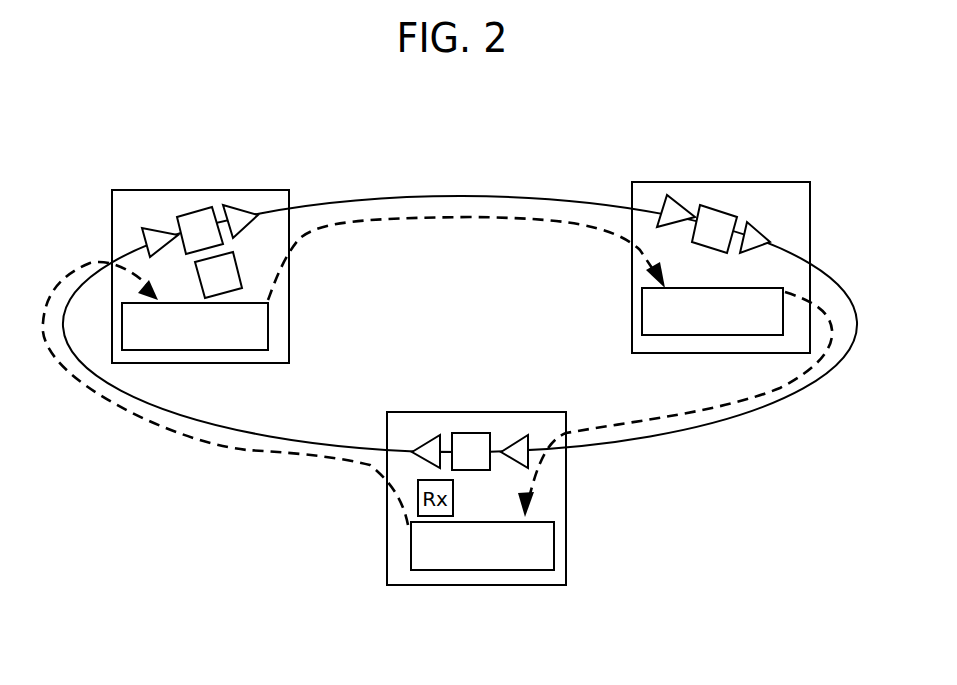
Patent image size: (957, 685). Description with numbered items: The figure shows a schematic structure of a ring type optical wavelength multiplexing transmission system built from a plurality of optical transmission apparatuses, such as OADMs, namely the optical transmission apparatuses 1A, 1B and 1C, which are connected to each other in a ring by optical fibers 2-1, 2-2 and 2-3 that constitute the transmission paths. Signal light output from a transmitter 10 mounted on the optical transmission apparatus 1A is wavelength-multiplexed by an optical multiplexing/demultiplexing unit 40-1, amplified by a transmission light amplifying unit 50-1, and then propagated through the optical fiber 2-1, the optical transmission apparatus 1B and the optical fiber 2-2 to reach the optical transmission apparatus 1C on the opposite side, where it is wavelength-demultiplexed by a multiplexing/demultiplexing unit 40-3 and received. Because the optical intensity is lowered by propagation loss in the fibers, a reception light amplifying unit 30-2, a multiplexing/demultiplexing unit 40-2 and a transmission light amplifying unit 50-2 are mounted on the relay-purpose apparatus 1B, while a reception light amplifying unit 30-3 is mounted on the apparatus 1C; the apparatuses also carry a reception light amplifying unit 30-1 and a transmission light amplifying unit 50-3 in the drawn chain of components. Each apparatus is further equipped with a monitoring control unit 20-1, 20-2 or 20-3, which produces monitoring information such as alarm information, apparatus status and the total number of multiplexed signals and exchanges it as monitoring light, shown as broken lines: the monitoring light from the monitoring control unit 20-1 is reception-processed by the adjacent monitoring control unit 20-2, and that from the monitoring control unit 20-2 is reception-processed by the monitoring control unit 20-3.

The optical transmission apparatus 1A is at (278, 363).
The optical transmission apparatus 1B is at (650, 353).
The optical transmission apparatus 1C is at (545, 585).
The optical fiber 2-1 is at (443, 196).
The optical fiber 2-2 is at (728, 420).
The optical fiber 2-3 is at (181, 418).
The transmitter 10 is at (240, 265).
The monitoring control unit 20-1 is at (218, 350).
The monitoring control unit 20-2 is at (725, 335).
The monitoring control unit 20-3 is at (458, 572).
The reception light amplifying unit 30-1 is at (153, 228).
The reception light amplifying unit 30-2 is at (672, 197).
The reception light amplifying unit 30-3 is at (515, 435).
The optical multiplexing/demultiplexing unit 40-1 is at (204, 207).
The multiplexing/demultiplexing unit 40-2 is at (717, 207).
The multiplexing/demultiplexing unit 40-3 is at (471, 433).
The transmission light amplifying unit 50-1 is at (252, 179).
The transmission light amplifying unit 50-2 is at (763, 230).
The transmission light amplifying unit 50-3 is at (423, 437).